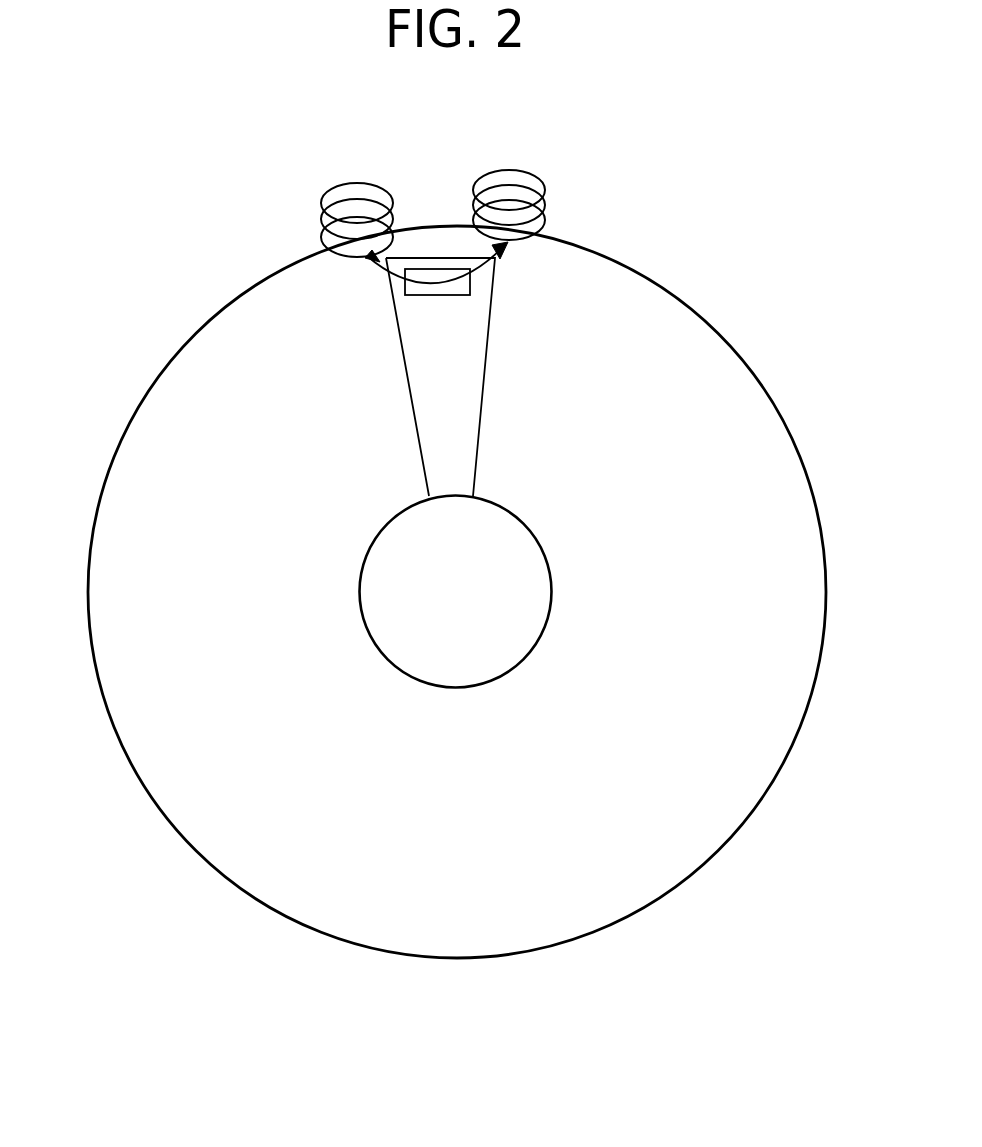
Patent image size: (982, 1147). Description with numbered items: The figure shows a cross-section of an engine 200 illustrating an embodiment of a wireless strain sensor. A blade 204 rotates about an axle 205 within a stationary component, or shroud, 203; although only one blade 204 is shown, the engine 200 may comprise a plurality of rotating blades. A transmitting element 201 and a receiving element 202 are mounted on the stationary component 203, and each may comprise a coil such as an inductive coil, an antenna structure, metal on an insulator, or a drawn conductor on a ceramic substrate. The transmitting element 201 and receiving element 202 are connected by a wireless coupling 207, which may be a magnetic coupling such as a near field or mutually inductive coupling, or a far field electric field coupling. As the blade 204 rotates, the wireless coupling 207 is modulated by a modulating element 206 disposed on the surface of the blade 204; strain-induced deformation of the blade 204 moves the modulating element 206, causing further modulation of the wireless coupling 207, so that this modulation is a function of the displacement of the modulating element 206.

The engine 200 is at (444, 551).
The transmitting element 201 is at (343, 185).
The receiving element 202 is at (537, 175).
The stationary component 203 is at (167, 820).
The blade 204 is at (483, 390).
The axle 205 is at (548, 558).
The modulating element 206 is at (470, 285).
The wireless coupling 207 is at (372, 272).